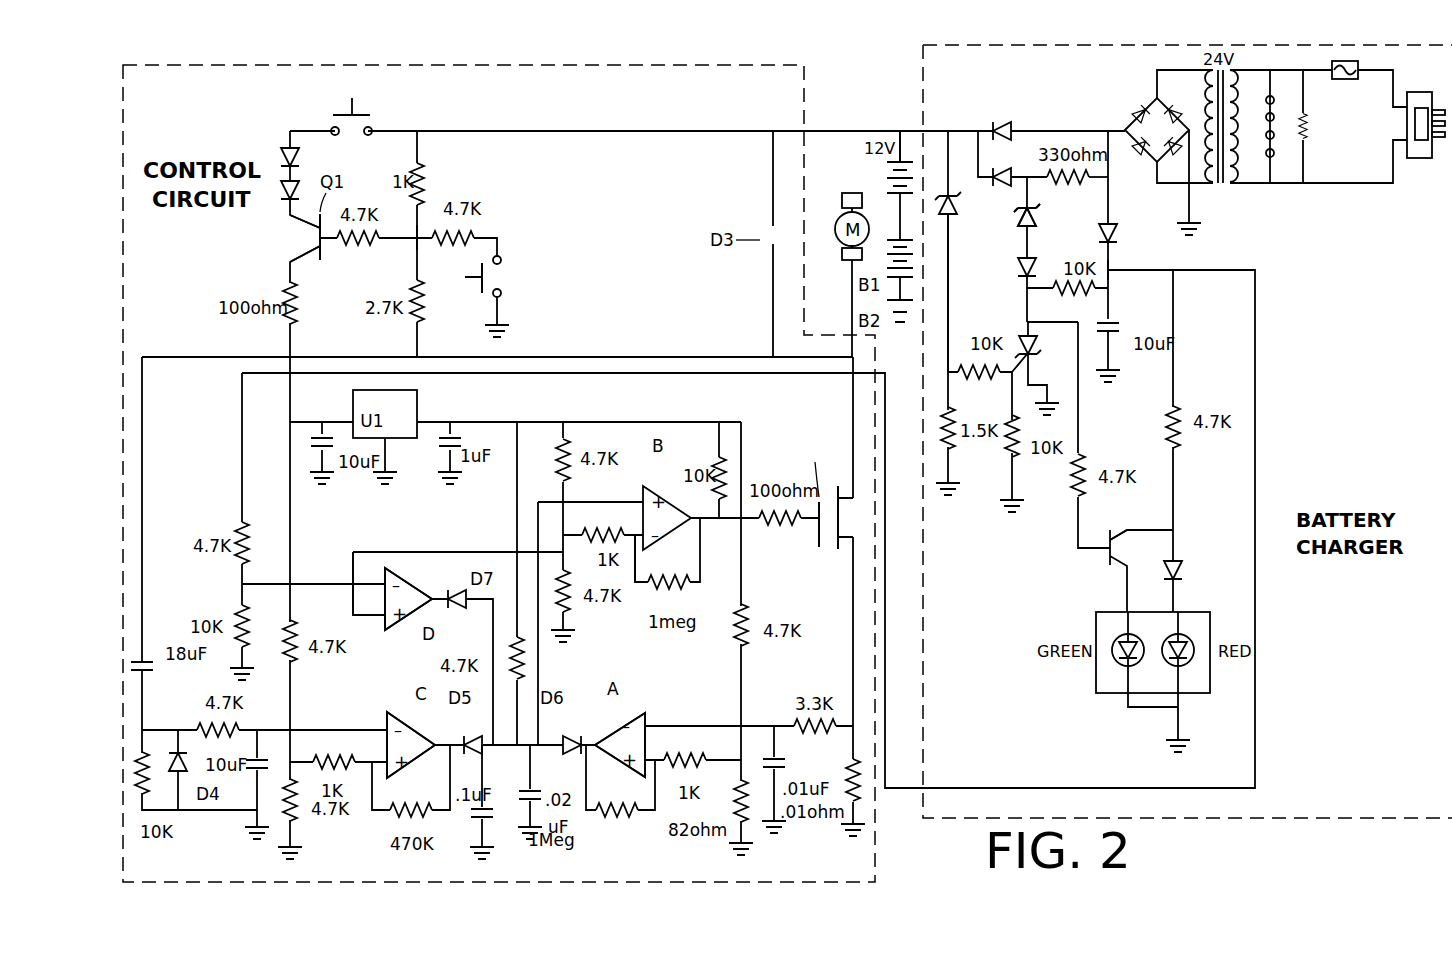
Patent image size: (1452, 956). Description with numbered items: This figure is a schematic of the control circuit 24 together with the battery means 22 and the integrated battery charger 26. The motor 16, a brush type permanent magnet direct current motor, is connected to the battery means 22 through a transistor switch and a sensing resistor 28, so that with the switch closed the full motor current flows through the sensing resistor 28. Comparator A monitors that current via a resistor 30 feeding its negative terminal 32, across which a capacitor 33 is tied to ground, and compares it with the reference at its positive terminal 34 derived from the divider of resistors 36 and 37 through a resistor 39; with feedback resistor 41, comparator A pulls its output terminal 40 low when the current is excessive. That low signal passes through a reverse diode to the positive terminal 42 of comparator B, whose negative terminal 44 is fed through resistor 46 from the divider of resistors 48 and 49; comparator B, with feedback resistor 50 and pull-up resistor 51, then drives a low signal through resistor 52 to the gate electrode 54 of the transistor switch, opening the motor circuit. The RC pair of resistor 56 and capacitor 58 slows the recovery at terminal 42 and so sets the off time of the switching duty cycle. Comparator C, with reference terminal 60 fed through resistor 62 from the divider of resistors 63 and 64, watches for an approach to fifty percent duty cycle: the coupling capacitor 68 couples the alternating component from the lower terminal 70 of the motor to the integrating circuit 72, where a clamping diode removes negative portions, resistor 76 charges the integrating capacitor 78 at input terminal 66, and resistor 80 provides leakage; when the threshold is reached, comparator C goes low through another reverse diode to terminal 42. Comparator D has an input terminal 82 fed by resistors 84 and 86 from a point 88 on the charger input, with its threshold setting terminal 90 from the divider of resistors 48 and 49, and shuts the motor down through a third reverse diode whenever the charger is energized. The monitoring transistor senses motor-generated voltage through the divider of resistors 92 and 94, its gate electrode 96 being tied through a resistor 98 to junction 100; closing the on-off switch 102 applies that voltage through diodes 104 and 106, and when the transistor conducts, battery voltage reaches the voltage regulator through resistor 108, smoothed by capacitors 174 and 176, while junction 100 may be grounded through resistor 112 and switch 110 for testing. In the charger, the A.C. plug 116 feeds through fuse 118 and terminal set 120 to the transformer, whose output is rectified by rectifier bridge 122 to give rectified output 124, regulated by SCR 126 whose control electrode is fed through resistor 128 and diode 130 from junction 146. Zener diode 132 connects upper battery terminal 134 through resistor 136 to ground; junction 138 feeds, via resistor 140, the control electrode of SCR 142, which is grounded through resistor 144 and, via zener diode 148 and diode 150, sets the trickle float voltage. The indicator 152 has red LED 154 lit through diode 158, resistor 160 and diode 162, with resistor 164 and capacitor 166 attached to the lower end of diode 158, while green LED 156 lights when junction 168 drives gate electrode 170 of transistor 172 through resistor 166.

The motor 16 is at (834, 224).
The battery means 22 is at (918, 133).
The control circuit 24 is at (724, 72).
The battery charger 26 is at (1312, 54).
The sensing resistor 28 is at (862, 810).
The resistor 30 is at (790, 726).
The negative terminal 32 is at (640, 722).
The capacitor 33 is at (786, 764).
The positive terminal 34 is at (662, 760).
The resistor 36 is at (748, 616).
The resistor 37 is at (708, 760).
The resistor 39 is at (734, 790).
The output terminal 40 is at (494, 744).
The feedback resistor 41 is at (596, 808).
The positive terminal 42 is at (628, 499).
The negative terminal 44 is at (630, 548).
The resistor 46 is at (604, 530).
The resistor 48 is at (558, 462).
The resistor 49 is at (570, 606).
The feedback resistor 50 is at (668, 578).
The resistor 51 is at (726, 462).
The resistor 52 is at (778, 526).
The gate electrode 54 is at (812, 530).
The resistor 56 is at (525, 668).
The capacitor 58 is at (519, 795).
The reference terminal 60 is at (372, 812).
The resistor 62 is at (322, 758).
The resistor 63 is at (300, 822).
The resistor 64 is at (300, 632).
The input terminal 66 is at (384, 726).
The coupling capacitor 68 is at (158, 669).
The lower terminal 70 is at (850, 322).
The integrating circuit 72 is at (200, 826).
The resistor 76 is at (238, 728).
The integrating capacitor 78 is at (257, 792).
The resistor 80 is at (160, 752).
The input terminal 82 is at (366, 585).
The resistor 84 is at (236, 609).
The resistor 86 is at (236, 528).
The point 88 is at (1110, 268).
The threshold setting terminal 90 is at (362, 622).
The resistor 92 is at (428, 183).
The resistor 94 is at (426, 306).
The gate electrode 96 is at (320, 262).
The resistor 98 is at (350, 248).
The junction 100 is at (418, 240).
The on-off switch 102 is at (362, 110).
The diode 104 is at (280, 155).
The diode 106 is at (281, 197).
The resistor 108 is at (282, 323).
The switch 110 is at (490, 275).
The resistor 112 is at (472, 230).
The A.C. plug 116 is at (1417, 95).
The fuse 118 is at (1356, 64).
The terminal set 120 is at (1276, 100).
The rectifier bridge 122 is at (1142, 110).
The rectified output 124 is at (1090, 125).
The SCR 126 is at (1006, 120).
The resistor 128 is at (1052, 185).
The diode 130 is at (1003, 188).
The zener diode 132 is at (955, 212).
The upper battery terminal 134 is at (908, 148).
The resistor 136 is at (950, 448).
The junction 138 is at (950, 335).
The resistor 140 is at (972, 380).
The SCR 142 is at (1038, 348).
The resistor 144 is at (1240, 72).
The junction 146 is at (1035, 165).
The zener diode 148 is at (1036, 222).
The diode 150 is at (1018, 268).
The indicator 152 is at (1083, 624).
The red LED 154 is at (1180, 640).
The green LED 156 is at (1113, 660).
The diode 158 is at (1117, 228).
The resistor 160 is at (1180, 410).
The diode 162 is at (1182, 565).
The resistor 164 is at (1100, 296).
The capacitor / resistor 166 is at (1118, 327).
The junction 168 is at (1012, 325).
The gate electrode 170 is at (1092, 545).
The transistor 172 is at (1120, 540).
The smoothing capacitor 174 is at (312, 445).
The smoothing capacitor 176 is at (445, 458).